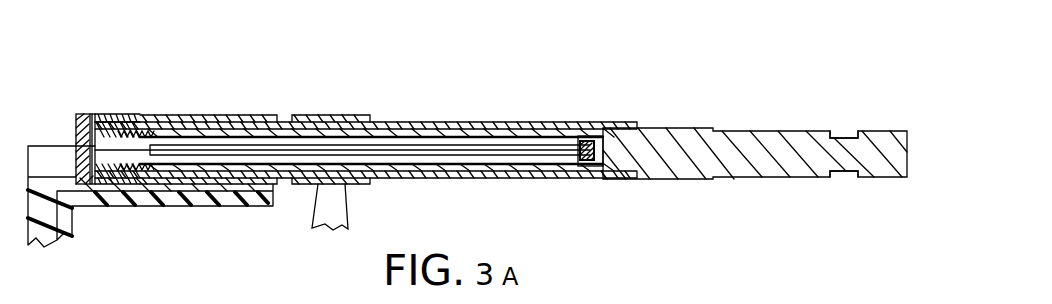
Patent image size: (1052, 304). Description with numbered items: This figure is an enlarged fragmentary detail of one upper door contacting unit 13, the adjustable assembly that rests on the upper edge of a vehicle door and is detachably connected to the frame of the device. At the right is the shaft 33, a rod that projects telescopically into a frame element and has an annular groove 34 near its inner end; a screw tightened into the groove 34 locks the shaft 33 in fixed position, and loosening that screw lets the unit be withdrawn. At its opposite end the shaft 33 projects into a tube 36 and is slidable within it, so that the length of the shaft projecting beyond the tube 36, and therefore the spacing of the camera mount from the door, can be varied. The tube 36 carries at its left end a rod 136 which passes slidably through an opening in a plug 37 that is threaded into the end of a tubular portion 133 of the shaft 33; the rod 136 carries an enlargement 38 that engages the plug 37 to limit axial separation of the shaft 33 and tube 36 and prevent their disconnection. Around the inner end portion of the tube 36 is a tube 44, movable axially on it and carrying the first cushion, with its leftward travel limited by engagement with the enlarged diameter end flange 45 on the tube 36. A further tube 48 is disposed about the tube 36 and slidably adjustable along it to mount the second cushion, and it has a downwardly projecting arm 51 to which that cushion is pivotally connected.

The upper door contacting unit 13 is at (709, 79).
The shaft 33 is at (745, 152).
The annular groove 34 is at (843, 132).
The tube 36 is at (545, 127).
The plug 37 is at (160, 132).
The enlargement 38 is at (583, 133).
The tube 44 is at (245, 116).
The enlarged diameter end flange 45 is at (102, 116).
The tube 48 is at (343, 115).
The downwardly projecting arm 51 is at (338, 203).
The tubular portion 133 is at (495, 122).
The rod 136 is at (415, 147).